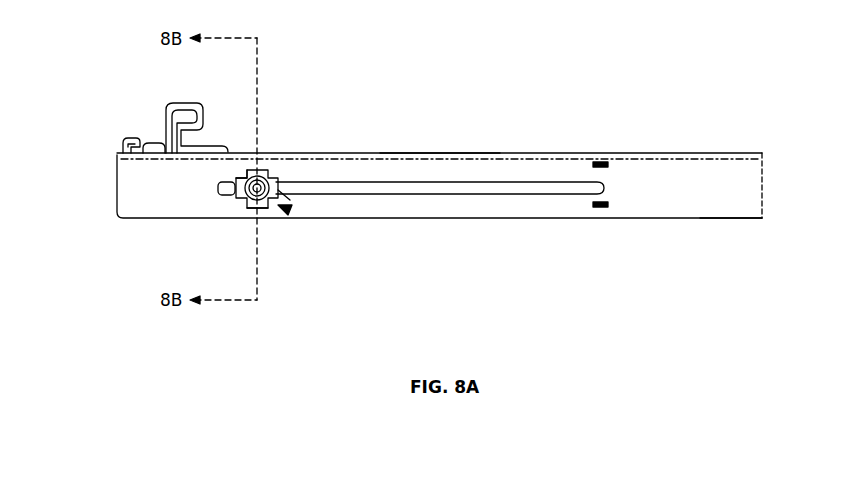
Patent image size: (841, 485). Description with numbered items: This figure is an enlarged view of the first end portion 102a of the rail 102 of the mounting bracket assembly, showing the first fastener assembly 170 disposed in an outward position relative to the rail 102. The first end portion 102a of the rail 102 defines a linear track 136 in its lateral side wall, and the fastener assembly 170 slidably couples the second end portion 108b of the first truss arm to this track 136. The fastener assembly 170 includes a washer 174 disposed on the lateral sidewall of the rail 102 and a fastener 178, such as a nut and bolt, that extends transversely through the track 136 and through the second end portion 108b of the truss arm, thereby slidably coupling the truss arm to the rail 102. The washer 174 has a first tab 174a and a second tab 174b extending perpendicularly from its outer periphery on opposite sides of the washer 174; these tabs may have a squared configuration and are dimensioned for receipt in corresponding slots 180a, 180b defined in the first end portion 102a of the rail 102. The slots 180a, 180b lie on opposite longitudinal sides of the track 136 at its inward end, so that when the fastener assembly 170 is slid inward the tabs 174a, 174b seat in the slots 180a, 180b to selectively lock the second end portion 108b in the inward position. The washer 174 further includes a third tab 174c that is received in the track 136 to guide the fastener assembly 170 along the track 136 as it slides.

The rail 102 is at (702, 153).
The first end portion of the rail 102a is at (428, 160).
The second end portion of the first truss arm 108b is at (747, 218).
The first pair of linear tracks 136 is at (466, 186).
The first fastener assembly 170 is at (289, 214).
The washer 174 is at (264, 187).
The first tab 174a is at (257, 160).
The second tab 174b is at (257, 209).
The third tab 174c is at (225, 188).
The fastener 178 is at (276, 190).
The first slot 180a is at (600, 153).
The second slot 180b is at (601, 218).